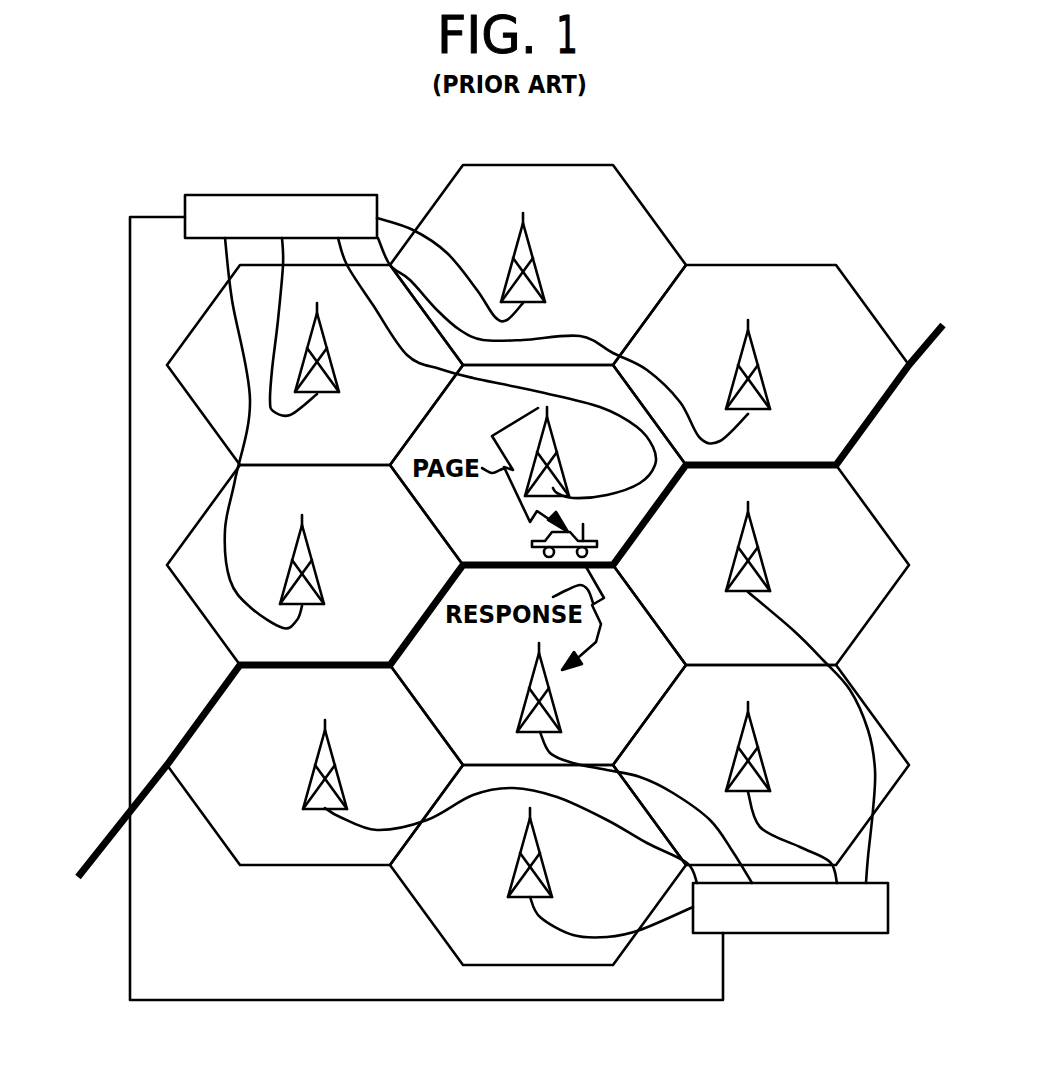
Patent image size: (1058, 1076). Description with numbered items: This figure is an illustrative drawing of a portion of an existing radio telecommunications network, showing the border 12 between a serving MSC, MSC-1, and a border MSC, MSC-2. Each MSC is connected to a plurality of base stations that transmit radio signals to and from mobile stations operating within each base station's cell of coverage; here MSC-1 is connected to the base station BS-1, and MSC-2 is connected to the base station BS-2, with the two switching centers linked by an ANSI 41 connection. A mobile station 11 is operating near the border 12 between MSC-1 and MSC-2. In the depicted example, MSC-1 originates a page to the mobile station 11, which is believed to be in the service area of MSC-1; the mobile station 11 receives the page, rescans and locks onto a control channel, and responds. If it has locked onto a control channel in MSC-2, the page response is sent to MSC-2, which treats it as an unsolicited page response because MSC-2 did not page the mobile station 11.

The mobile station 11 is at (530, 537).
The border 12 is at (932, 325).
The ANSI 41 connection 41 is at (426, 608).
The base station BS-1 is at (600, 463).
The base station BS-2 is at (555, 707).
The serving MSC MSC-1 is at (353, 195).
The border MSC MSC-2 is at (805, 933).